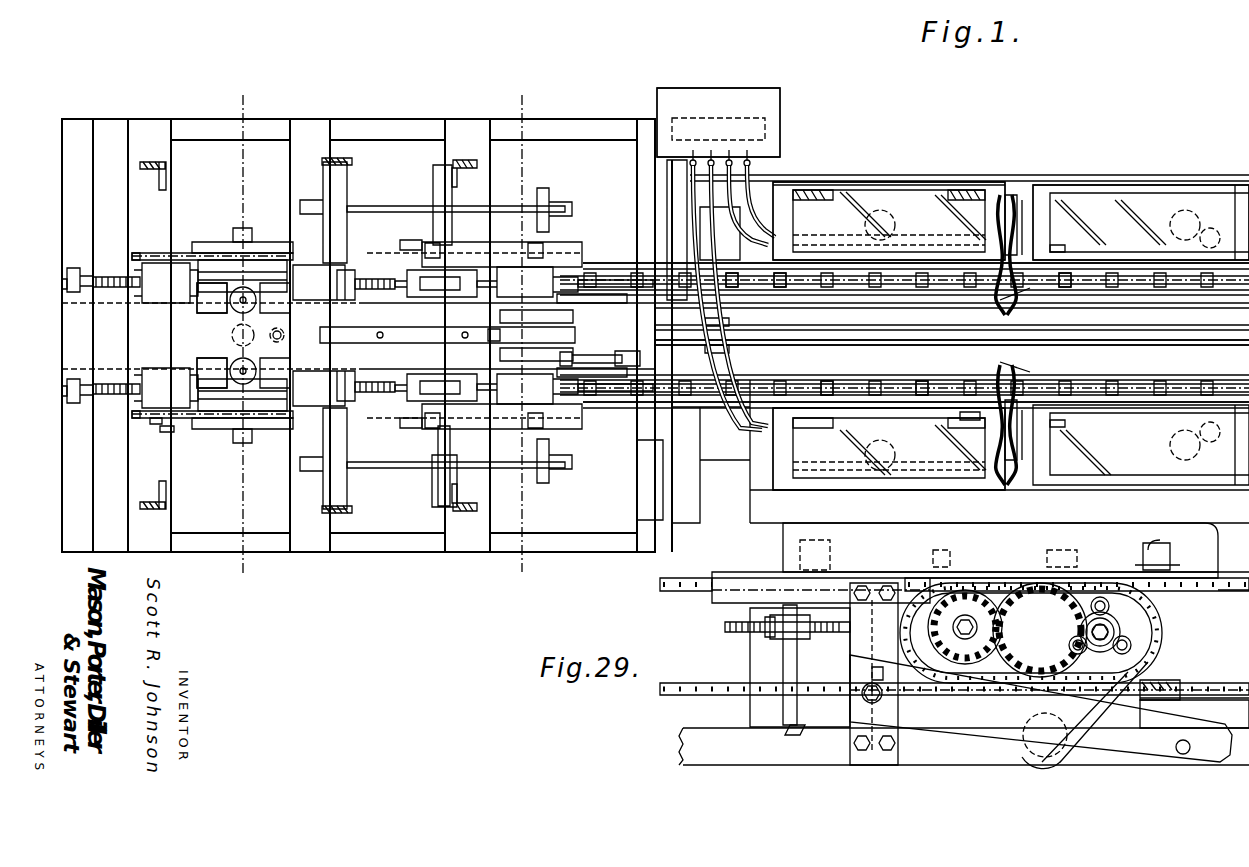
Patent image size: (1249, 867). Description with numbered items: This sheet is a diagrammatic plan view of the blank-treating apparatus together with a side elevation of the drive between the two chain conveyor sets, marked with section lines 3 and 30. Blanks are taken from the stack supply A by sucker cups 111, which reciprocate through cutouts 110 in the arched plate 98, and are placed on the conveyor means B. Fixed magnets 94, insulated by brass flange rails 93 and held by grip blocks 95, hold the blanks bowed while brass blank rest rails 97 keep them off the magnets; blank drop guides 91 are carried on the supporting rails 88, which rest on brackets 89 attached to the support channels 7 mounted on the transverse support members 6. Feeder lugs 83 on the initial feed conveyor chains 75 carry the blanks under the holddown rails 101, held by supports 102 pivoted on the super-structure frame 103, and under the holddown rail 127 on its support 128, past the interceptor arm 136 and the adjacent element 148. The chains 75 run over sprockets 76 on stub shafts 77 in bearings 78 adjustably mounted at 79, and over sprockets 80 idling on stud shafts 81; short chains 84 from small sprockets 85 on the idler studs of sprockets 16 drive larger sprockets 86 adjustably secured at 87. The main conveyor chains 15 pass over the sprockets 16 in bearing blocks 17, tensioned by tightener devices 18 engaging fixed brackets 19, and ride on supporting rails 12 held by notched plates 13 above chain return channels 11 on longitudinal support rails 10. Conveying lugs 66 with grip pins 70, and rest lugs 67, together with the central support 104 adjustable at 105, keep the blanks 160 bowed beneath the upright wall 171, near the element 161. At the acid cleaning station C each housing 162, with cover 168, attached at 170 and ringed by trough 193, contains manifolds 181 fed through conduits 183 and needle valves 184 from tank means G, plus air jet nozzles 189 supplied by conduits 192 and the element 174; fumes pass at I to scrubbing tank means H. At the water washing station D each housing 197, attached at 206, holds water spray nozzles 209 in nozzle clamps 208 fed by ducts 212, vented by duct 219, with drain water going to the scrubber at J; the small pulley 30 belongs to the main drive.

In FIG. 1, the section line 3- 3 is at (243, 573).
In FIG. 1, the small pulley 30 is at (522, 570).
In FIG. 1, the transverse support members 6 is at (290, 157).
In FIG. 1, the support channels 7 is at (626, 260).
In FIG. 29, the support channels 7 is at (711, 736).
In FIG. 29, the longitudinal support rails 10 is at (1155, 732).
In FIG. 29, the chain return channels 11 is at (1217, 686).
In FIG. 1, the supporting rails 12 is at (799, 292).
In FIG. 29, the supporting rails 12 is at (1220, 592).
In FIG. 1, the notched plates 13 is at (769, 292).
In FIG. 1, the main conveyor chains 15 is at (925, 292).
In FIG. 29, the main conveyor chains 15 is at (1178, 572).
In FIG. 1, the sprockets 16 is at (420, 295).
In FIG. 29, the sprockets 16 is at (1020, 578).
In FIG. 1, the bearing blocks 17 is at (468, 298).
In FIG. 1, the tightener devices 18 is at (348, 292).
In FIG. 29, the tightener devices 18 is at (725, 624).
In FIG. 1, the fixed brackets 19 is at (373, 255).
In FIG. 29, the fixed brackets 19 is at (798, 668).
In FIG. 1, the blank holding and conveying lugs 66 is at (846, 290).
In FIG. 29, the blank holding and conveying lugs 66 is at (945, 548).
In FIG. 1, the rest lugs 67 is at (1065, 293).
In FIG. 29, the rest lugs 67 is at (1078, 550).
In FIG. 29, the grip pin 70 is at (980, 550).
In FIG. 1, the initial feed conveyor chains 75 is at (188, 421).
In FIG. 29, the initial feed conveyor chains 75 is at (710, 683).
In FIG. 1, the sprockets 76 is at (151, 253).
In FIG. 1, the stub shafts 77 is at (135, 314).
In FIG. 1, the bearings 78 is at (114, 290).
In FIG. 1, the adjustable mounting 79 is at (75, 293).
In FIG. 1, the sprockets 80 is at (535, 300).
In FIG. 29, the sprockets 80 is at (1040, 630).
In FIG. 29, the stud shafts 81 is at (1113, 630).
In FIG. 1, the feeder lugs 83 is at (133, 252).
In FIG. 29, the feeder lugs 83 is at (814, 555).
In FIG. 1, the short chains 84 is at (488, 243).
In FIG. 29, the short chains 84 is at (987, 588).
In FIG. 29, the small sprockets 85 is at (965, 627).
In FIG. 29, the larger sprockets 86 is at (1098, 590).
In FIG. 29, the adjustable securing means 87 is at (1128, 645).
In FIG. 1, the supporting rails 88 is at (200, 242).
In FIG. 29, the supporting rails 88 is at (712, 592).
In FIG. 29, the brackets 89 is at (850, 645).
In FIG. 1, the blank drop guides 91 is at (238, 228).
In FIG. 1, the brass flange rails 93 is at (165, 433).
In FIG. 1, the fixed magnets 94 is at (225, 294).
In FIG. 1, the grip blocks 95 is at (300, 210).
In FIG. 1, the brass blank rest rails 97 is at (247, 263).
In FIG. 1, the arched plate 98 is at (600, 232).
In FIG. 1, the holddown rails 101 is at (364, 206).
In FIG. 29, the holddown rails 101 is at (786, 540).
In FIG. 1, the supports 102 is at (348, 225).
In FIG. 1, the super-structure frame 103 is at (454, 166).
In FIG. 1, the longitudinal rod or support 104 is at (765, 330).
In FIG. 1, the vertically adjustable support 105 is at (720, 357).
In FIG. 1, the cutouts 110 is at (276, 335).
In FIG. 1, the sucker cups 111 is at (236, 318).
In FIG. 1, the holddown rail 127 is at (400, 343).
In FIG. 1, the holddown rail support 128 is at (496, 337).
In FIG. 1, the interceptor or justifier arm 136 is at (620, 370).
In FIG. 1, the rod 148 is at (575, 300).
In FIG. 1, the blanks 160 is at (838, 198).
In FIG. 1, the dashed line 161 is at (662, 472).
In FIG. 1, the acid treating housing 162 is at (862, 185).
In FIG. 1, the cover 168 is at (830, 186).
In FIG. 1, the housing attachment 170 is at (836, 240).
In FIG. 1, the longitudinal upright wall 171 is at (768, 333).
In FIG. 1, the guide 174 is at (700, 490).
In FIG. 1, the manifolds 181 is at (833, 430).
In FIG. 1, the acid delivery conduits 183 is at (686, 183).
In FIG. 1, the needle valves 184 is at (734, 150).
In FIG. 1, the air jet nozzles 189 is at (953, 332).
In FIG. 1, the conduits 192 is at (1001, 187).
In FIG. 1, the trough arrangement 193 is at (875, 498).
In FIG. 1, the water washing housing 197 is at (1118, 180).
In FIG. 1, the housing attachment 206 is at (1083, 337).
In FIG. 1, the nozzle clamps 208 is at (1055, 190).
In FIG. 1, the water spray nozzles 209 is at (1122, 241).
In FIG. 1, the water supply ducts 212 is at (1019, 180).
In FIG. 1, the duct 219 is at (1185, 213).
In FIG. 1, the stack supply A is at (1226, 327).
In FIG. 1, the conveyor means B is at (173, 241).
In FIG. 1, the acid cleaning station C is at (908, 168).
In FIG. 1, the water washing station D is at (1144, 180).
In FIG. 1, the tank means G is at (755, 82).
In FIG. 1, the scrubbing tank means H is at (1140, 348).
In FIG. 1, the fume duct I is at (910, 362).
In FIG. 1, the drain connection J is at (1155, 322).